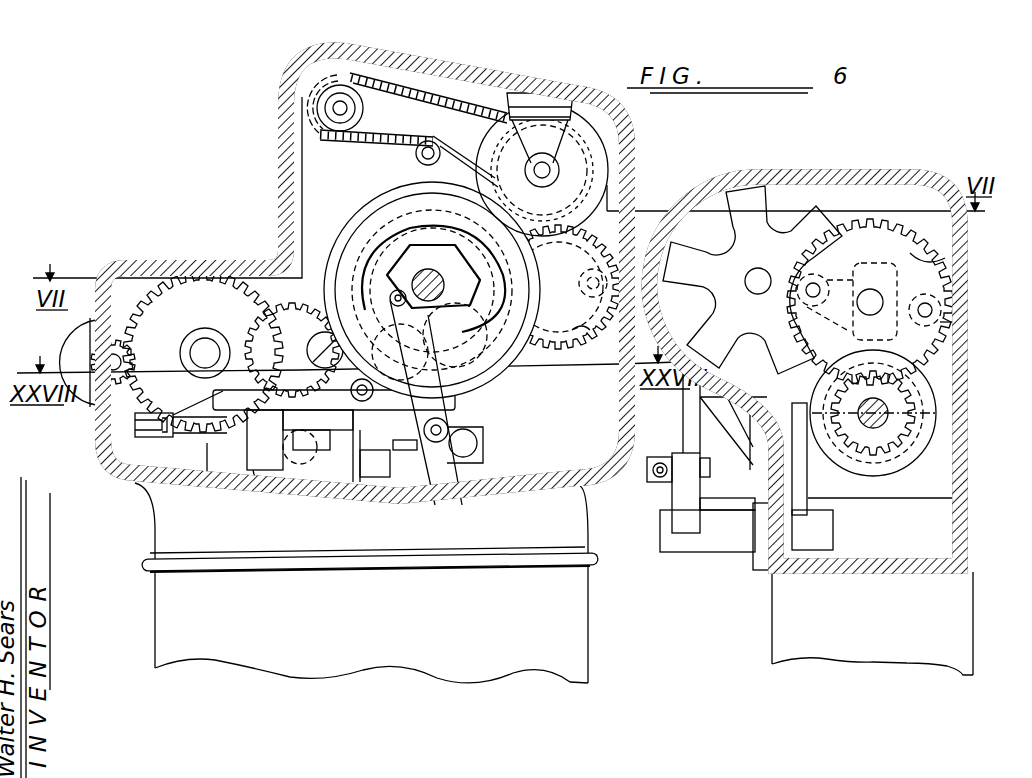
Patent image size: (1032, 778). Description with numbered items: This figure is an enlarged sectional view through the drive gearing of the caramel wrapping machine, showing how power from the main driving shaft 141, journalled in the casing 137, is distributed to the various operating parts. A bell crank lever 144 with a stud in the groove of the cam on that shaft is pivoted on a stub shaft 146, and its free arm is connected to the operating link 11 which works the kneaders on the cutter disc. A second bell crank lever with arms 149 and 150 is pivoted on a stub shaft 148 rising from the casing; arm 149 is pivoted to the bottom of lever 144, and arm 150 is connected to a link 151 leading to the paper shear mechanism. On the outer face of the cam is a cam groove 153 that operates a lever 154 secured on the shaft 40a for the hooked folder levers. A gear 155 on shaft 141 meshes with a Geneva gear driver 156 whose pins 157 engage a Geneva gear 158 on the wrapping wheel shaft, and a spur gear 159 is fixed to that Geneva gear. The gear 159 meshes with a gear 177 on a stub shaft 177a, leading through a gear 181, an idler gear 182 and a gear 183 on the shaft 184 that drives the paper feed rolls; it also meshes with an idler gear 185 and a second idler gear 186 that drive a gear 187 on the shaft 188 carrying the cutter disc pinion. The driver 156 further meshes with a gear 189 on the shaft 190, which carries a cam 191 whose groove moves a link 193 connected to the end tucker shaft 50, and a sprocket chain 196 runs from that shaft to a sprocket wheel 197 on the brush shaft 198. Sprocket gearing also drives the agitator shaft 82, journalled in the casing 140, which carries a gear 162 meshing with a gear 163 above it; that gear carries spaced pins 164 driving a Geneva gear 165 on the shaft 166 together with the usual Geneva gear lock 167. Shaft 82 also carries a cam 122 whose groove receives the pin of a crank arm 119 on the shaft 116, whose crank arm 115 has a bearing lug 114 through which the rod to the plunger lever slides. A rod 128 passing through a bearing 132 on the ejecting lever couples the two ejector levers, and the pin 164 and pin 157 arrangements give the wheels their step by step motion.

The operating link 11 is at (170, 433).
The shaft 40a is at (458, 490).
The shaft 50 is at (600, 103).
The agitator shaft 82 is at (872, 423).
The bearing lug 114 is at (652, 470).
The crank arm 115 is at (683, 497).
The shaft 116 is at (727, 533).
The crank arm 119 is at (881, 514).
The cam 122 is at (913, 388).
The rod 128 is at (497, 376).
The bearing 132 is at (465, 443).
The casing 137 is at (527, 84).
The casing 140 is at (913, 183).
The main driving shaft 141 is at (522, 357).
The bell crank lever 144 is at (253, 446).
The stub shaft 146 is at (237, 388).
The stub shaft 148 is at (332, 497).
The arm 149 is at (310, 497).
The arm 150 is at (368, 482).
The link 151 is at (441, 470).
The cam groove 153 is at (372, 214).
The lever 154 is at (323, 340).
The gear 155 is at (354, 241).
The Geneva gear driver 156 is at (581, 331).
The pins 157 is at (556, 326).
The Geneva gear 158 is at (404, 196).
The spur gear 159 is at (443, 194).
The gear 162 is at (927, 447).
The gear 163 is at (958, 258).
The spaced pins 164 is at (815, 305).
The Geneva gear 165 is at (773, 230).
The shaft 166 is at (757, 278).
The Geneva gear lock 167 is at (551, 265).
The gear 177 is at (490, 388).
The stub shaft 177a is at (490, 415).
The gear 181 is at (350, 430).
The idler gear 182 is at (350, 388).
The gear 183 is at (302, 478).
The shaft 184 is at (955, 322).
The idler gear 185 is at (296, 320).
The second idler gear 186 is at (182, 303).
The gear 187 is at (113, 338).
The shaft 188 is at (110, 360).
The gear 189 is at (445, 139).
The shaft 190 is at (552, 166).
The cam 191 is at (490, 140).
The link 193 is at (613, 157).
The sprocket chain 196 is at (420, 131).
The sprocket wheel 197 is at (322, 102).
The shaft 198 is at (428, 75).